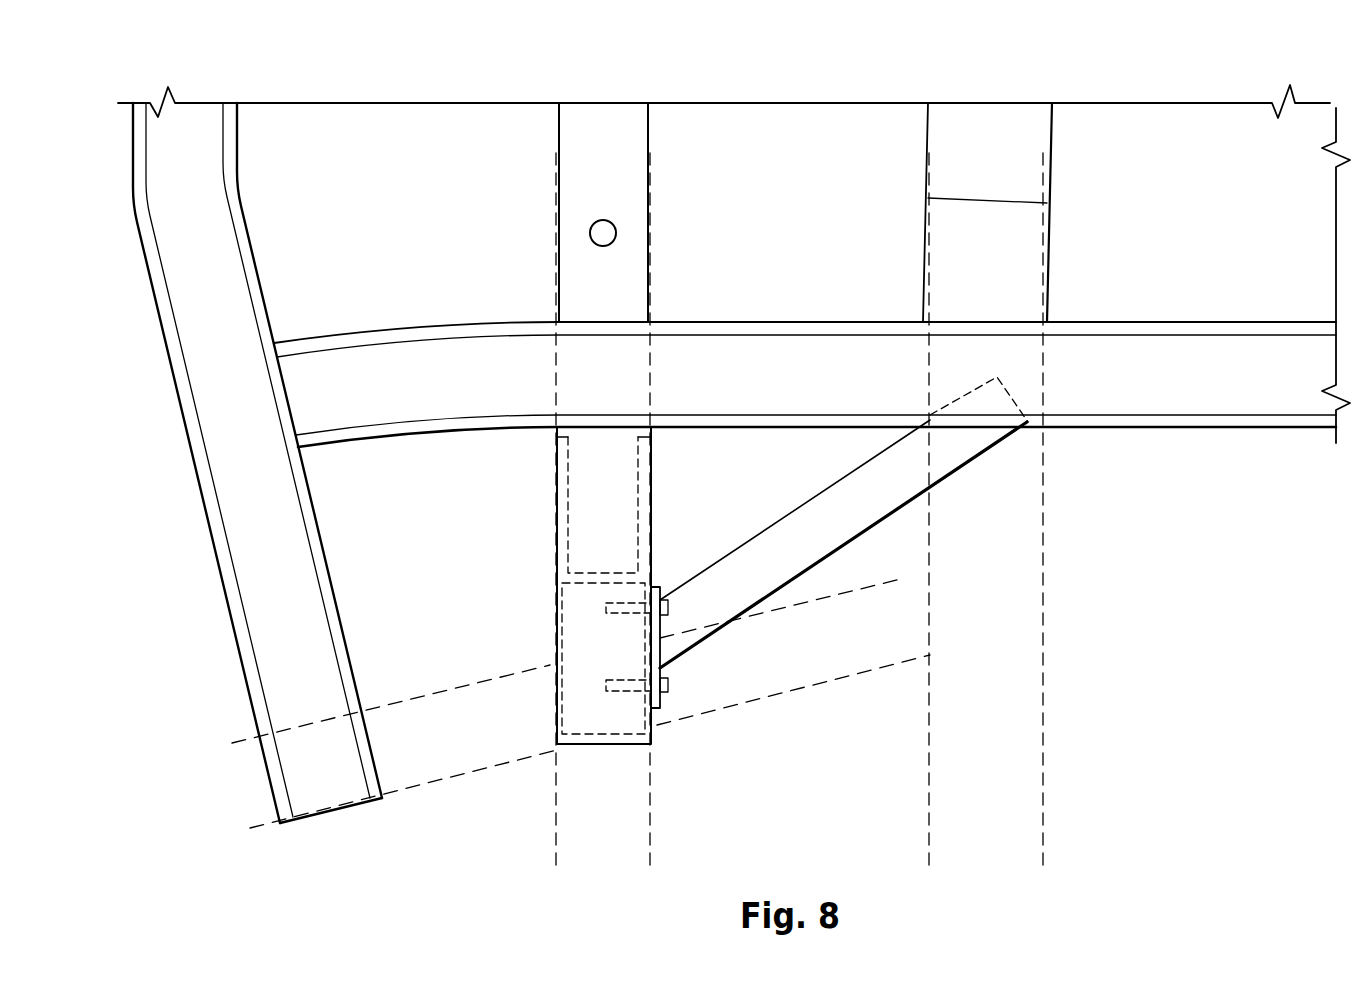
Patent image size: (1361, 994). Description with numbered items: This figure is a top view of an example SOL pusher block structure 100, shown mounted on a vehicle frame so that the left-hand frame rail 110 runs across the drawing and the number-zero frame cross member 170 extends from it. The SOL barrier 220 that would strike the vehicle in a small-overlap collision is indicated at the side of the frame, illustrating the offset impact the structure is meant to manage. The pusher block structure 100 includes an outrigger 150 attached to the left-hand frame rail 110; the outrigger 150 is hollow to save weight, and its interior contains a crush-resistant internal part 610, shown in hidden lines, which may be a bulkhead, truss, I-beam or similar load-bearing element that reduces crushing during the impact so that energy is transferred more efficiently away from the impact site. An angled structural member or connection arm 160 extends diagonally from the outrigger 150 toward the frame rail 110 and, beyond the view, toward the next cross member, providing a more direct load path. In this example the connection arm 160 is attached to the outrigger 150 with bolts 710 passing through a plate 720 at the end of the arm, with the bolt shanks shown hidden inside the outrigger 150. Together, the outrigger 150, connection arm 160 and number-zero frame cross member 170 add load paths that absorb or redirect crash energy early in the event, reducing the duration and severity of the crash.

The SOL pusher block structure 100 is at (1165, 78).
The left-hand frame rail 110 is at (1172, 428).
The outrigger 150 is at (557, 537).
The angled structural member 160 is at (778, 520).
The No. 0 frame cross member 170 is at (568, 200).
The SOL barrier 220 is at (410, 325).
The crush-resistant internal part 610 is at (562, 637).
The bolts 710 is at (668, 605).
The plates 720 is at (660, 642).